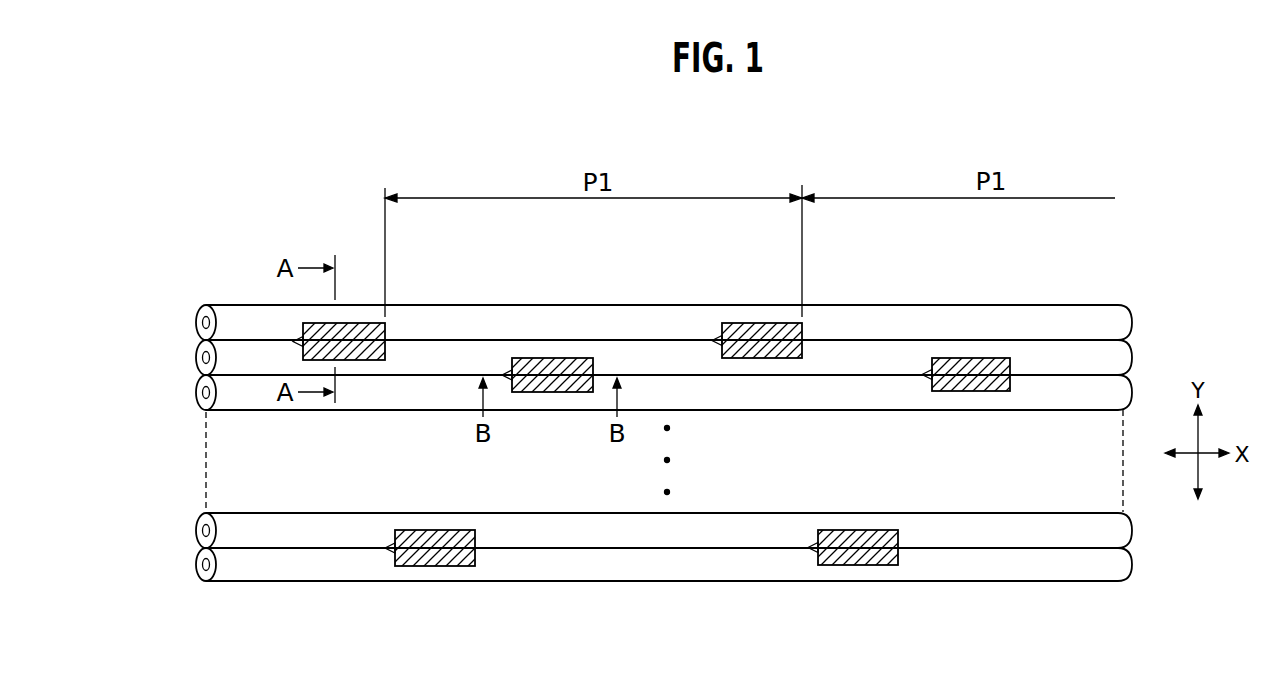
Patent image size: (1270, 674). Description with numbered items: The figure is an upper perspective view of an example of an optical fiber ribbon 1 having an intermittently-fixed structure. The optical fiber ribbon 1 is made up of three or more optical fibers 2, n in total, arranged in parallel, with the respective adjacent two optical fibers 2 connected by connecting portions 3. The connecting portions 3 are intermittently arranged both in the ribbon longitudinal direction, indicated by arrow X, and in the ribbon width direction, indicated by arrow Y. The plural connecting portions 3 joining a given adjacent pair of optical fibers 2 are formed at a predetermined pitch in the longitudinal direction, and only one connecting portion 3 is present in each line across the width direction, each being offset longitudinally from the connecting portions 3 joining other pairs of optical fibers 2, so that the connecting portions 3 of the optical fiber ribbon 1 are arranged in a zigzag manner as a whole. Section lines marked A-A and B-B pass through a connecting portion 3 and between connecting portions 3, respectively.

The optical fiber ribbon 1 is at (633, 431).
The optical fibers 2 is at (196, 394).
The connecting portions 3 is at (370, 323).